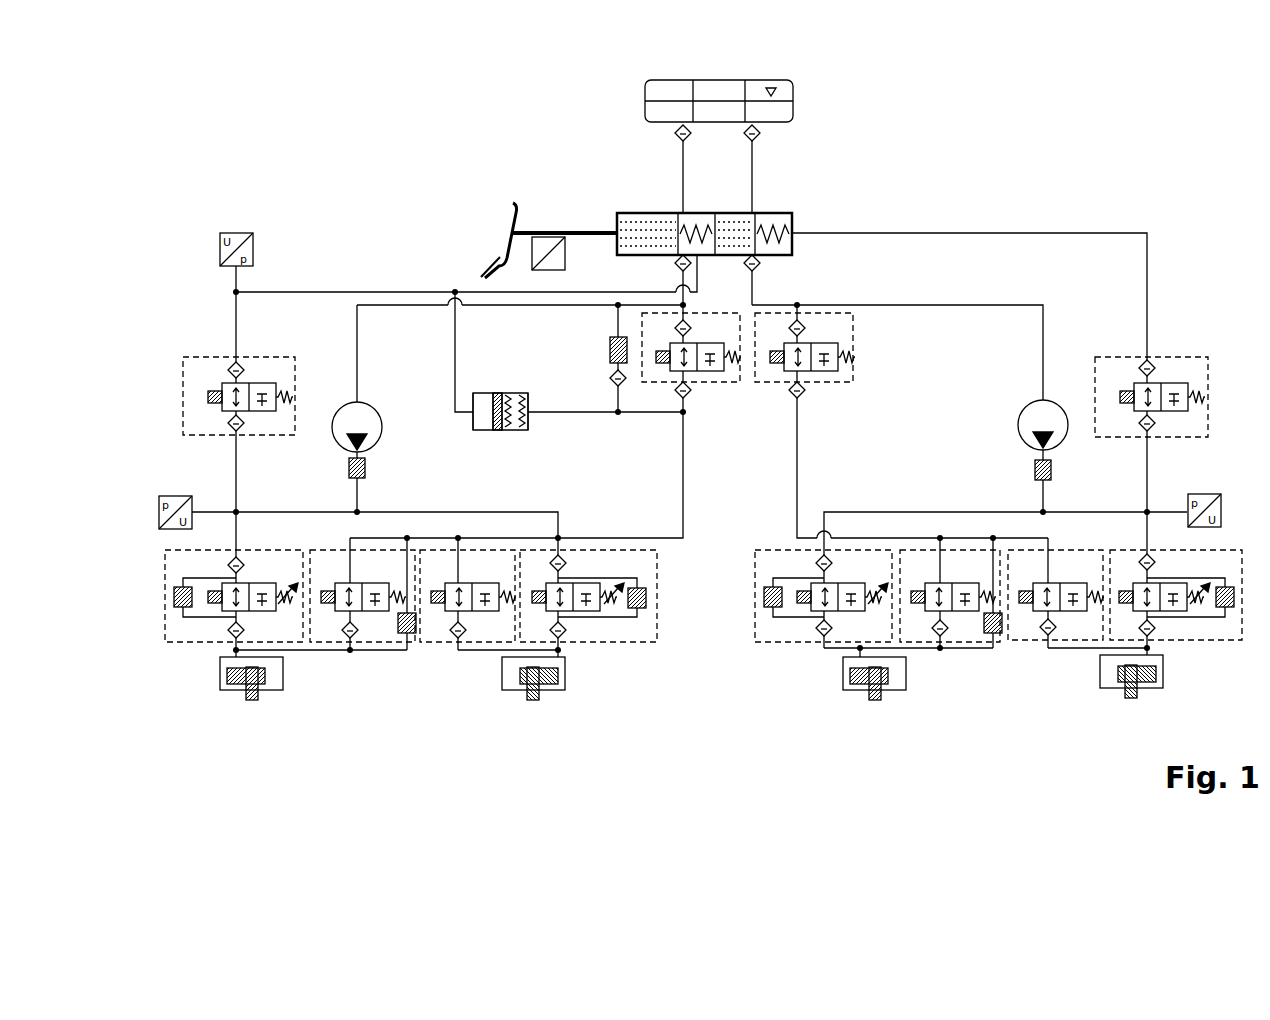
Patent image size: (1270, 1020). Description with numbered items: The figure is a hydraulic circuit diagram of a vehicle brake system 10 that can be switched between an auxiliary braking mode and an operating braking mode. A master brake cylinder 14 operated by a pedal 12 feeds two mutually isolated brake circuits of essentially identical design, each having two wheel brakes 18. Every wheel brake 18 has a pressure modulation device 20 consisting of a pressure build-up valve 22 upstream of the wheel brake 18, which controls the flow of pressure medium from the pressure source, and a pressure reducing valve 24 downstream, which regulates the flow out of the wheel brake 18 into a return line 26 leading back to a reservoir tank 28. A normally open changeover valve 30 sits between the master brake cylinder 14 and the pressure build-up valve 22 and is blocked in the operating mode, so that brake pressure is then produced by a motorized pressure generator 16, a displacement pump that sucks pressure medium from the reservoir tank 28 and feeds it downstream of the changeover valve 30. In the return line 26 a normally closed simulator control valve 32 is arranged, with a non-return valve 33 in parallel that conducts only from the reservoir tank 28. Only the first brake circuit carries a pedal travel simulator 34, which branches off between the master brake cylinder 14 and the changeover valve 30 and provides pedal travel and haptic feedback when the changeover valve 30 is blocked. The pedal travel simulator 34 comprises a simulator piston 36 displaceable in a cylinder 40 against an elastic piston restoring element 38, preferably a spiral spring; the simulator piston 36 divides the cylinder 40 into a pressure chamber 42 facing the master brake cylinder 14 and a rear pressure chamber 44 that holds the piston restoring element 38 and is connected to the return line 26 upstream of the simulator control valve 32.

The vehicle brake system 10 is at (366, 190).
The pedal 12 is at (495, 248).
The master brake cylinder 14 is at (722, 198).
The pressure generator 16 is at (381, 414).
The wheel brake 18 is at (278, 674).
The pressure modulation device 20 is at (703, 589).
The pressure build-up valve 22 is at (187, 636).
The pressure reducing valve 24 is at (387, 638).
The return line 26 is at (684, 470).
The reservoir tank 28 is at (793, 93).
The changeover valve 30 is at (197, 357).
The simulator control valve 32 is at (729, 383).
The non-return valve 33 is at (608, 348).
The pedal travel simulator 34 is at (472, 418).
The simulator piston 36 is at (498, 393).
The piston restoring element 38 is at (518, 393).
The cylinder 40 is at (485, 430).
The pressure chamber 42 is at (485, 393).
The pressure chamber 44 is at (520, 430).